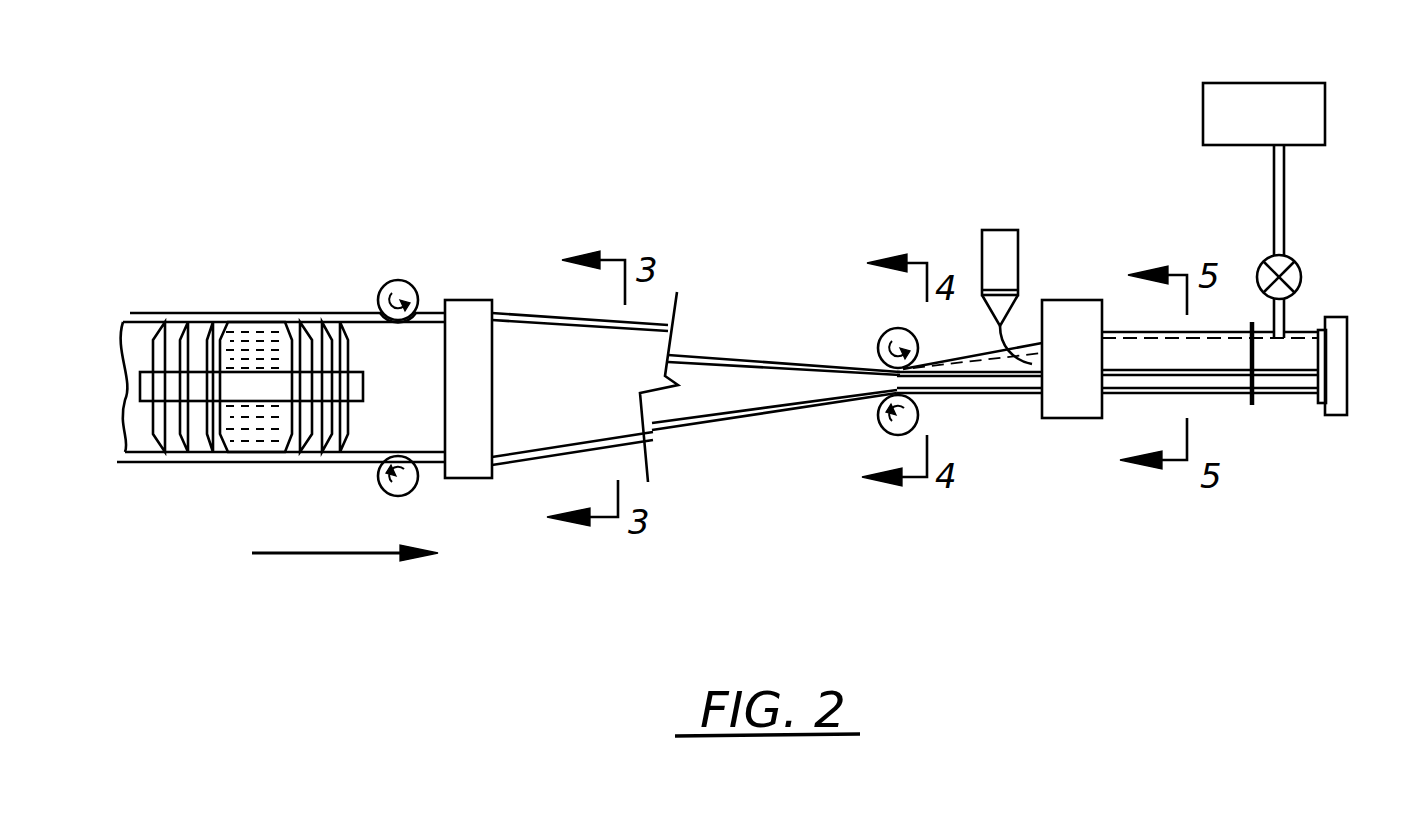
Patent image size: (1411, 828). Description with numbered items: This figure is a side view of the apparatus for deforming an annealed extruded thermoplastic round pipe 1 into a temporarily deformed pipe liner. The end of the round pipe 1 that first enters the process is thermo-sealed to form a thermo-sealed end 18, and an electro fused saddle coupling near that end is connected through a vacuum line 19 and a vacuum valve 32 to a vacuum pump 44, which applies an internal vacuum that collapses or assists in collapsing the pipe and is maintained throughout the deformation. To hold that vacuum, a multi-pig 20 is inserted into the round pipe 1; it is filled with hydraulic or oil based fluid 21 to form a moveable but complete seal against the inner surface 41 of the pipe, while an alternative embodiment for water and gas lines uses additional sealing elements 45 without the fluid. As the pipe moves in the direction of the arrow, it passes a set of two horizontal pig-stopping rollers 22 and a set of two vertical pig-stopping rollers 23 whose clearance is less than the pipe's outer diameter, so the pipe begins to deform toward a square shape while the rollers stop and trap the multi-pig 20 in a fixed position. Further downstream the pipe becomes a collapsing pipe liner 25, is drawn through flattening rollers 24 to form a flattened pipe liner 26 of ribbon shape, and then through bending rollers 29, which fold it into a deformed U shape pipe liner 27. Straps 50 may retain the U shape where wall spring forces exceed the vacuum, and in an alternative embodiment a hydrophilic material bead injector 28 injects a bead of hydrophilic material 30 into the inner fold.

The extruded thermoplastic round pipe 1 is at (138, 323).
The thermo-sealed end 18 is at (1347, 353).
The vacuum line 19 is at (1287, 318).
The multi-pig 20 is at (300, 335).
The hydraulic or oil based fluid 21 is at (233, 337).
The horizontal pig-stopping rollers 22 is at (410, 287).
The vertical pig-stopping rollers 23 is at (468, 482).
The flattening rollers 24 is at (885, 330).
The collapsing pipe liner 25 is at (520, 308).
The flattened pipe liner 26 is at (925, 430).
The deformed U shape pipe liner 27 is at (1122, 332).
The hydrophilic material bead injector 28 is at (1017, 230).
The bending rollers 29 is at (1068, 420).
The bead of hydrophilic material 30 is at (1010, 358).
The vacuum valve 32 is at (1290, 258).
The inner surface 41 is at (132, 330).
The vacuum pump 44 is at (1295, 83).
The additional sealing elements 45 is at (155, 452).
The straps 50 is at (1255, 402).